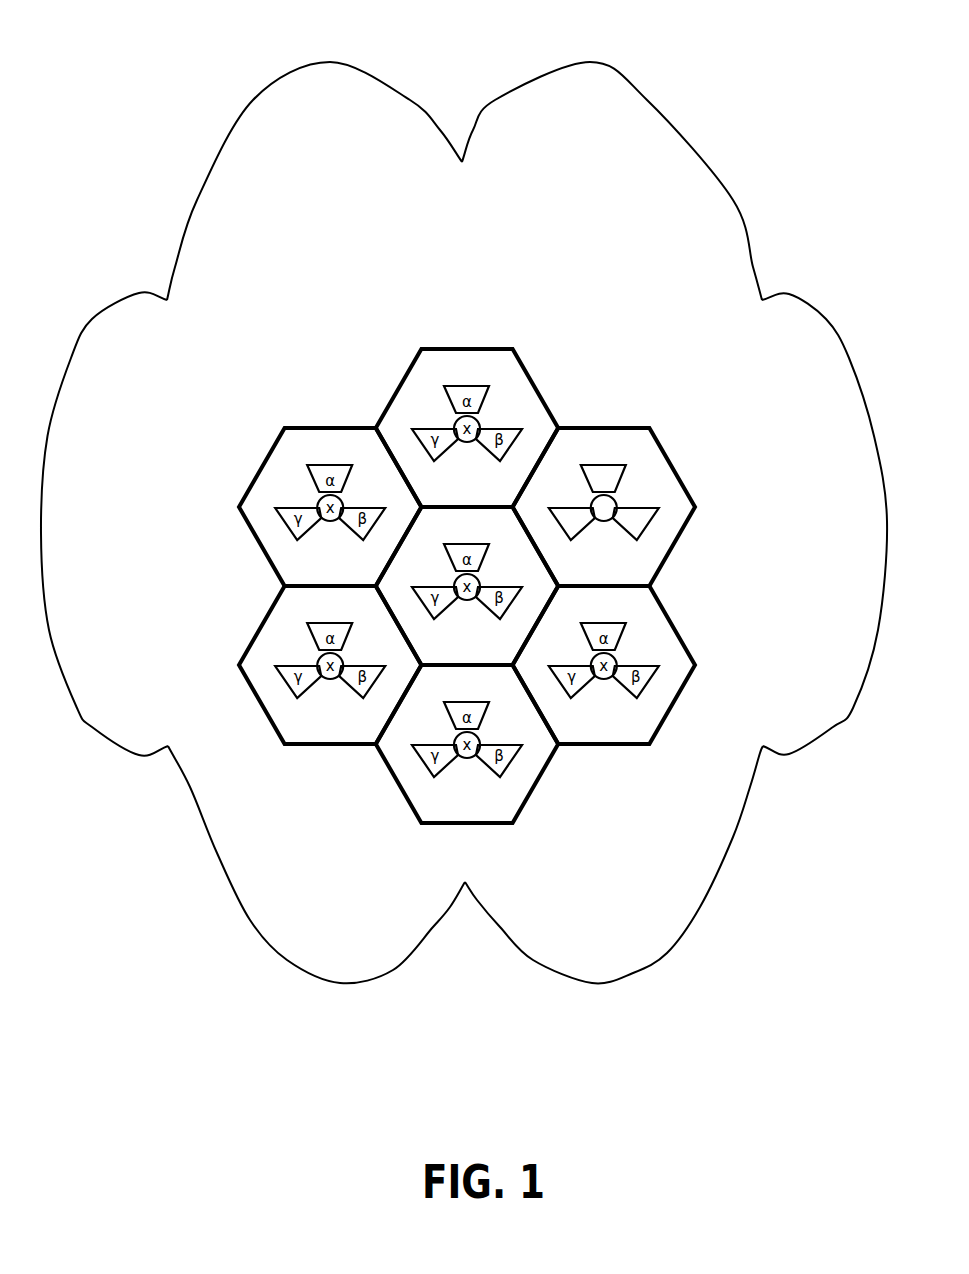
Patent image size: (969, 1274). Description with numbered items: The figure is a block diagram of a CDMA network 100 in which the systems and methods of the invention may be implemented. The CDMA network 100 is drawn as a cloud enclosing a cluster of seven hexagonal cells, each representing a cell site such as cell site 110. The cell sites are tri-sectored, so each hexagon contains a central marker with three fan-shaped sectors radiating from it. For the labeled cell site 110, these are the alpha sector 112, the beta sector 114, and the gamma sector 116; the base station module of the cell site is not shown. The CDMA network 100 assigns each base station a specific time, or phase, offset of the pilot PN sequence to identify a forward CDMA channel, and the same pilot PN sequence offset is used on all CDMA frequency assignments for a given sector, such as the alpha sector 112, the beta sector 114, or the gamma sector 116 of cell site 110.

The CDMA network 100 is at (340, 61).
The cell site 110 is at (685, 484).
The sector α 112 is at (658, 437).
The sector β 114 is at (681, 560).
The sector γ 116 is at (592, 545).